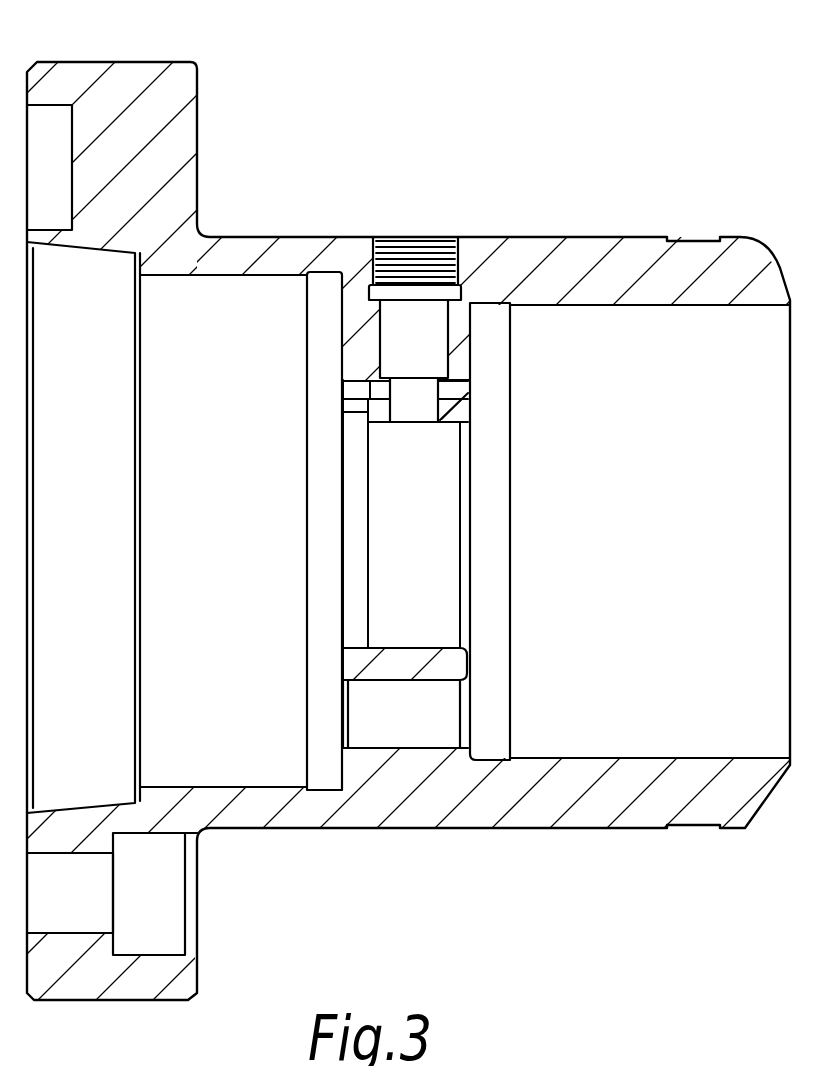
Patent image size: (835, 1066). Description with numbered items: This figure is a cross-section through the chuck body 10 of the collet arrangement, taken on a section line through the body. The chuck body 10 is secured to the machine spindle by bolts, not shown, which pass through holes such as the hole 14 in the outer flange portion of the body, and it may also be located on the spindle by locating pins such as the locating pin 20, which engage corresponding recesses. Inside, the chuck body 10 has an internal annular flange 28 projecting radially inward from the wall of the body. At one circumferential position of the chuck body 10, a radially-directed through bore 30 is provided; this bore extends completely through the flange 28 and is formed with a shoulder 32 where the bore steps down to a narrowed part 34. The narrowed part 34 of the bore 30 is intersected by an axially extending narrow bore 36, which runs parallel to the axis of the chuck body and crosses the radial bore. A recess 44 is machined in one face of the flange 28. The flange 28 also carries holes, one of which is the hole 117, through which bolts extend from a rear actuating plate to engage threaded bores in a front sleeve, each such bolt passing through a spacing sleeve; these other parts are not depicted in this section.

The chuck body 10 is at (590, 262).
The hole 14 is at (162, 920).
The locating pin 20 is at (95, 166).
The internal annular flange 28 is at (485, 360).
The radially-directed through bore 30 is at (414, 300).
The shoulder 32 is at (386, 378).
The narrowed part 34 is at (420, 410).
The axially extending narrow bore 36 is at (458, 394).
The recess 44 is at (352, 417).
The hole 117 is at (453, 715).